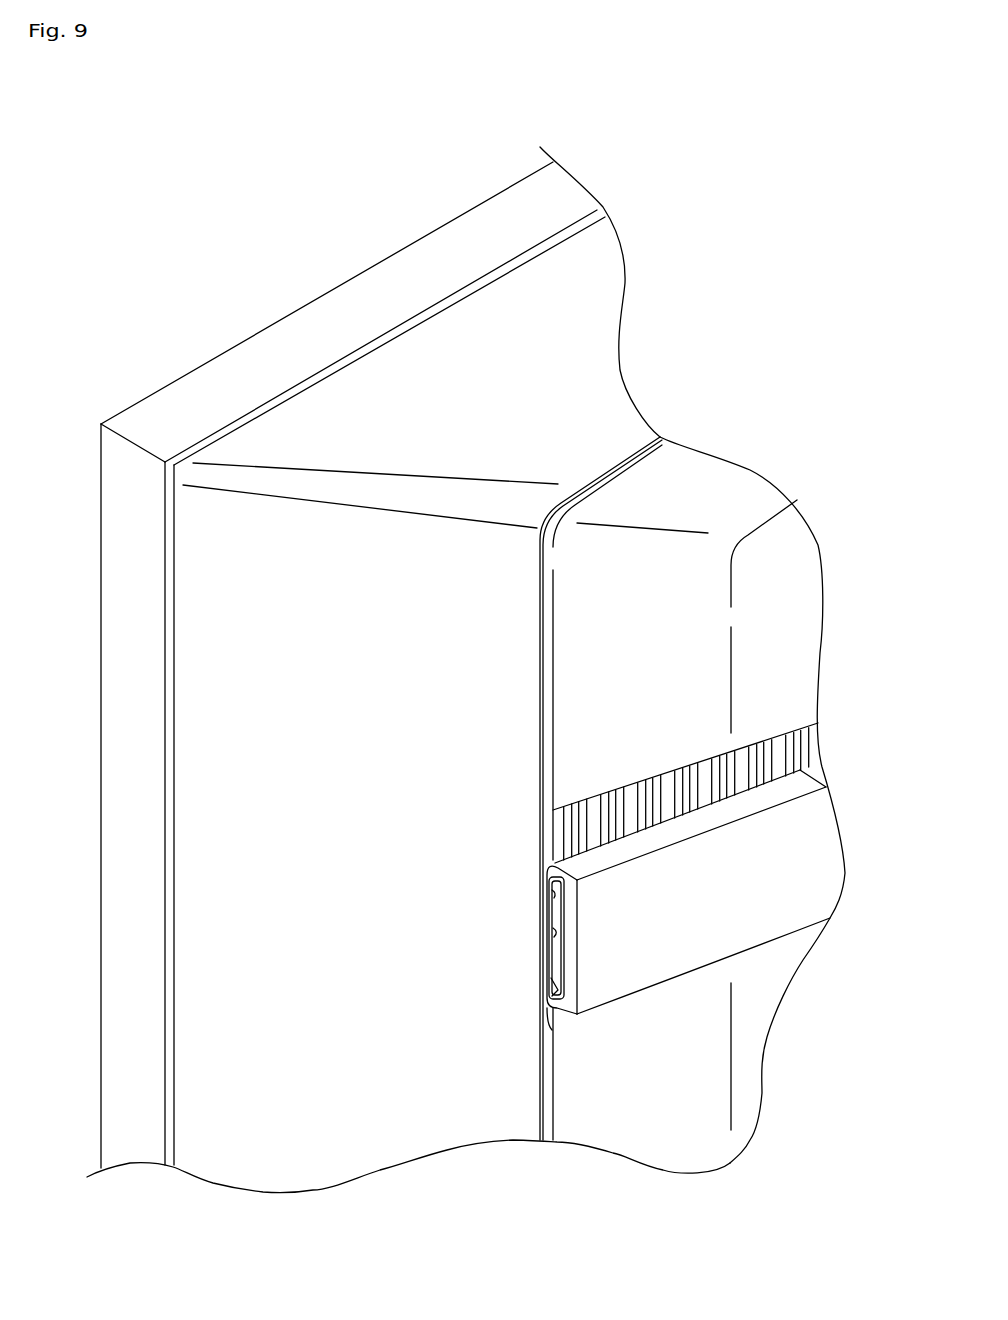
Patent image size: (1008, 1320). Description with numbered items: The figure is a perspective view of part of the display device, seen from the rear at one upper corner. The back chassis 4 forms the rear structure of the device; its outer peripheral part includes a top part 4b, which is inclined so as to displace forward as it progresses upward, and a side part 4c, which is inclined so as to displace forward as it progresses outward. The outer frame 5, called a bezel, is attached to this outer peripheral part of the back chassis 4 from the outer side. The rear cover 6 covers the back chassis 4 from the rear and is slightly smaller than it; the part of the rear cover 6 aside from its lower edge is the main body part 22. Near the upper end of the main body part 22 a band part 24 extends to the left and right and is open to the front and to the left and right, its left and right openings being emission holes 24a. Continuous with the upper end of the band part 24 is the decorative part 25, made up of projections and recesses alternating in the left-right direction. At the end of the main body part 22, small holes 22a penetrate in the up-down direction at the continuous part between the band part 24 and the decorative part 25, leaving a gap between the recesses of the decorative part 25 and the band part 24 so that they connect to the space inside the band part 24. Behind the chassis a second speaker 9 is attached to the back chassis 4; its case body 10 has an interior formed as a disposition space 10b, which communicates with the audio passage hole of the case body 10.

The back chassis 4 is at (573, 350).
The top part 4b is at (612, 373).
The side part 4c is at (213, 826).
The outer frame 5 is at (413, 251).
The rear cover 6 is at (779, 613).
The second speaker 9 is at (552, 913).
The case body 10 is at (552, 953).
The disposition space 10b is at (552, 898).
The main body part 22 is at (800, 638).
The small hole 22a is at (660, 830).
The band part 24 is at (805, 906).
The emission hole 24a is at (546, 972).
The decorative part 25 is at (795, 777).